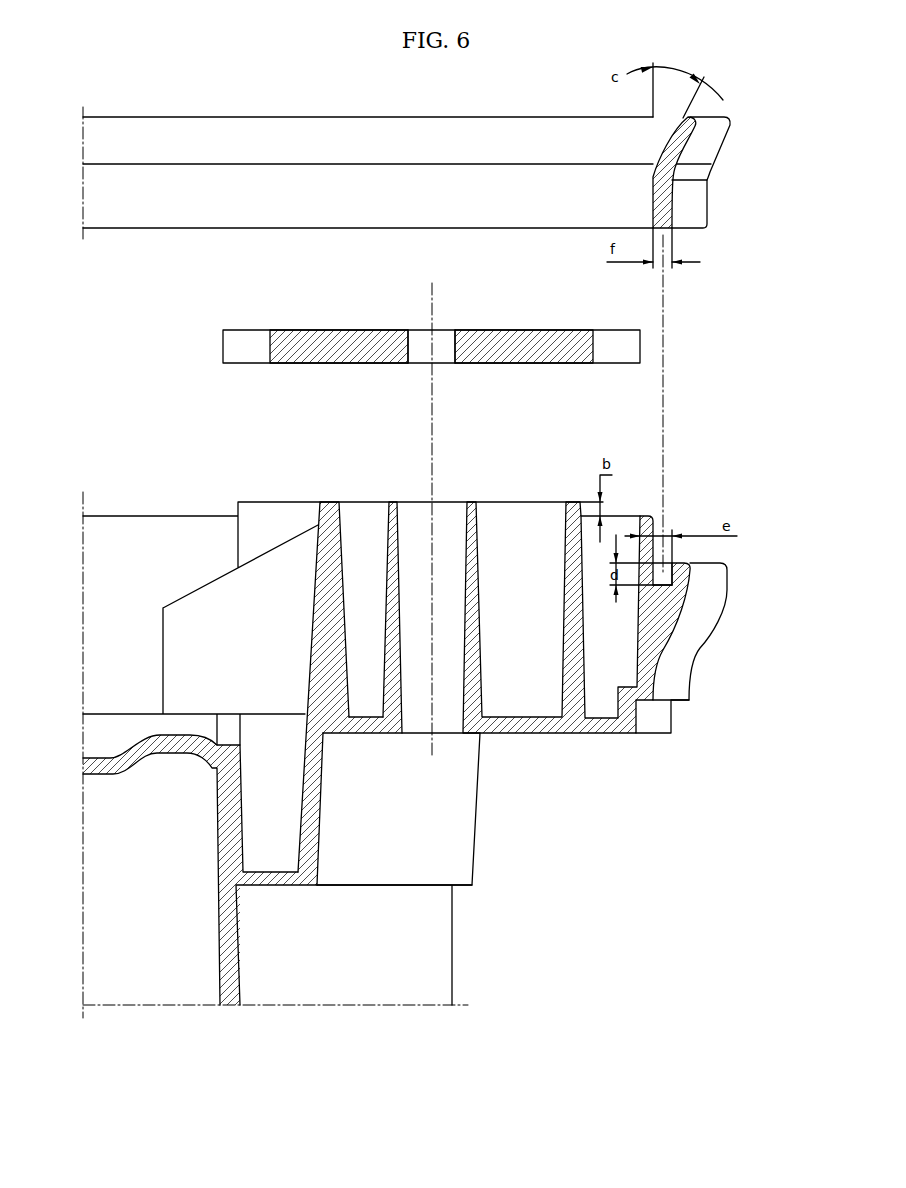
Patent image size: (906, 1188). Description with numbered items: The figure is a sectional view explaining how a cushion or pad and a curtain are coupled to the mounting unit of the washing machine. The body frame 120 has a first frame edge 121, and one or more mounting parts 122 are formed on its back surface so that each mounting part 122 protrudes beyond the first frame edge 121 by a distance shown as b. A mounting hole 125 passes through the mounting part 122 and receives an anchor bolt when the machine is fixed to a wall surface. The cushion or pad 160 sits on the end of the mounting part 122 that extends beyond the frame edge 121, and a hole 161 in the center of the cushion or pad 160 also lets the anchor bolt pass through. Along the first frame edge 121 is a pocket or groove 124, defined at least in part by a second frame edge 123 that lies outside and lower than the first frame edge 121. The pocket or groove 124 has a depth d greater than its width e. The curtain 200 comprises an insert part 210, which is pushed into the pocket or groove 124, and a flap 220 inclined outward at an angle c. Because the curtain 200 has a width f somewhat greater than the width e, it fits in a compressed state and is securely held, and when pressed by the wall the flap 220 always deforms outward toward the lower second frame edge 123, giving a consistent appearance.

The curtain 200 is at (383, 115).
The flap 220 is at (726, 145).
The insert part 210 is at (708, 202).
The cushion and/or pad 160 is at (333, 328).
The hole 161 is at (447, 342).
The first frame edge 121 is at (158, 516).
The mounting part 122 is at (327, 500).
The mounting hole 125 is at (407, 506).
The body frame 120 is at (480, 812).
The second frame edge 123 is at (718, 553).
The pocket and/or groove 124 is at (667, 575).